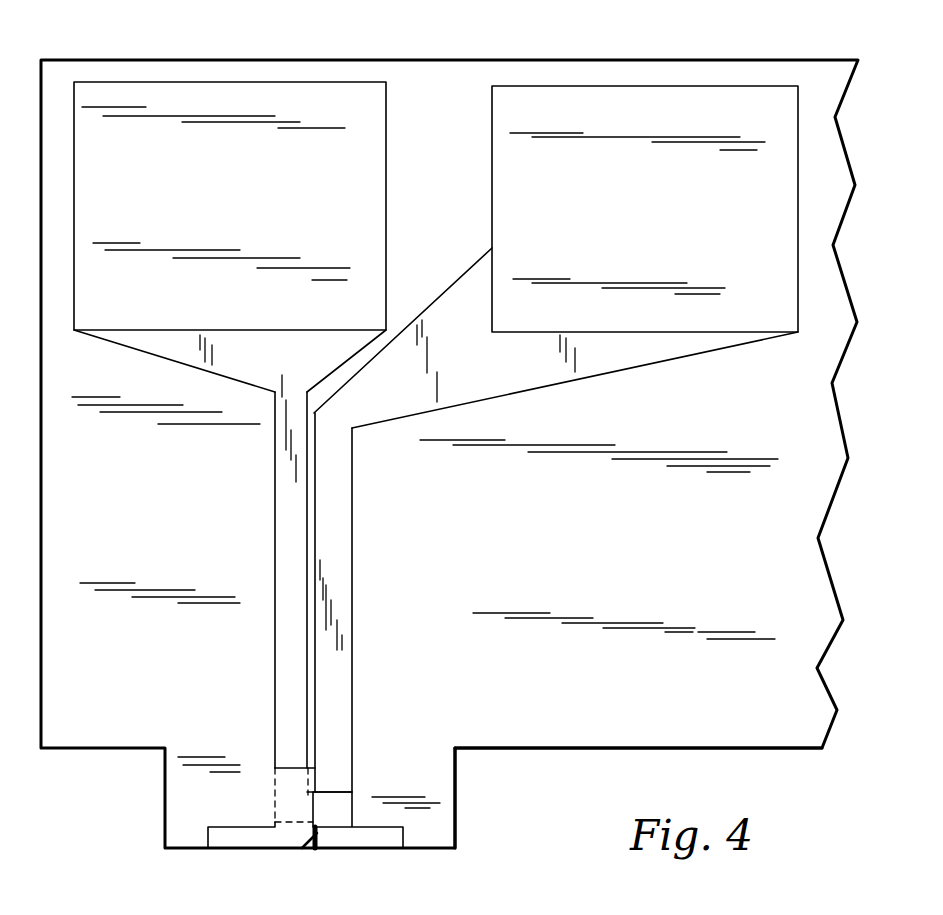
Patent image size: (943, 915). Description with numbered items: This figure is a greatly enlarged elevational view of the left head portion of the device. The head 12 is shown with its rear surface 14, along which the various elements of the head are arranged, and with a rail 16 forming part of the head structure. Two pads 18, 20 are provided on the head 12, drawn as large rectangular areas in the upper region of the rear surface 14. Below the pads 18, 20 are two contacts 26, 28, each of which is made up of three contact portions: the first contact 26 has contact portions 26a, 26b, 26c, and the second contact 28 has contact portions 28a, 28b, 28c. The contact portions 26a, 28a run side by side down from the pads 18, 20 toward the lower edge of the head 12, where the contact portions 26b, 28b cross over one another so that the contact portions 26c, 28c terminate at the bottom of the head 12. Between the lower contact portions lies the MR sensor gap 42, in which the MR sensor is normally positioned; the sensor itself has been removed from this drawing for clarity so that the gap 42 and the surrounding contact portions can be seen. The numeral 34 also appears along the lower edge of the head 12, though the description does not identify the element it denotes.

The head 12 is at (168, 50).
The rear surface 14 is at (627, 546).
The rail 16 is at (455, 808).
The pad 18 is at (242, 208).
The pad 20 is at (652, 206).
The contact 26 is at (230, 549).
The contact portion 26a is at (282, 637).
The contact portion 26b is at (287, 790).
The contact portion 26c is at (368, 837).
The contact 28 is at (556, 520).
The contact portion 28a is at (340, 662).
The contact portion 28b is at (332, 777).
The contact portion 28c is at (278, 837).
The bottom edge of substrate 34 is at (563, 753).
The MR sensor gap 42 is at (307, 842).